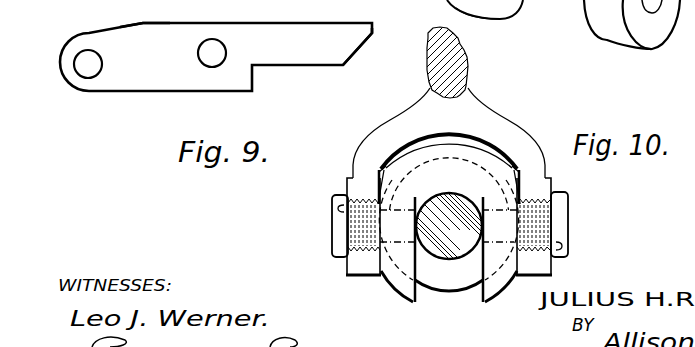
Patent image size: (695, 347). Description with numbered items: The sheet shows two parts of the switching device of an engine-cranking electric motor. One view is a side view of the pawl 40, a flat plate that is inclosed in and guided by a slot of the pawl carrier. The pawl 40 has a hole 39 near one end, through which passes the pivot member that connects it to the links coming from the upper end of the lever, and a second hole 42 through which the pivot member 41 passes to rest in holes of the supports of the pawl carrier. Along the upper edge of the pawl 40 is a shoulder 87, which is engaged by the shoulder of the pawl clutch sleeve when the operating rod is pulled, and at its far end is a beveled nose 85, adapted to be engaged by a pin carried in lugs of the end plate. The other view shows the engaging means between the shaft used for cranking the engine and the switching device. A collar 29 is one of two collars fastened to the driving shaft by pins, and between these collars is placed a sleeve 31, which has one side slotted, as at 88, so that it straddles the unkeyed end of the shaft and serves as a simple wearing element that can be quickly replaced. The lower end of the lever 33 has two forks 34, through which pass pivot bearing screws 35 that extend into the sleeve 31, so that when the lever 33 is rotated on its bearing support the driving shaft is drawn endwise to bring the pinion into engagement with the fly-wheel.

In FIG. 9, the pawl 40 is at (143, 91).
In FIG. 9, the hole 39 is at (80, 62).
In FIG. 9, the hole 42 is at (217, 51).
In FIG. 9, the shoulder 87 is at (143, 25).
In FIG. 9, the beveled nose 85 is at (361, 50).
In FIG. 10, the lever 33 is at (467, 63).
In FIG. 10, the sleeve 31 is at (393, 166).
In FIG. 10, the forks 34 is at (352, 264).
In FIG. 10, the pivot bearing screws 35 is at (335, 222).
In FIG. 10, the collar 29 is at (437, 289).
In FIG. 10, the slot 88 is at (485, 299).
In FIG. 10, the pivot member 41 is at (458, 258).